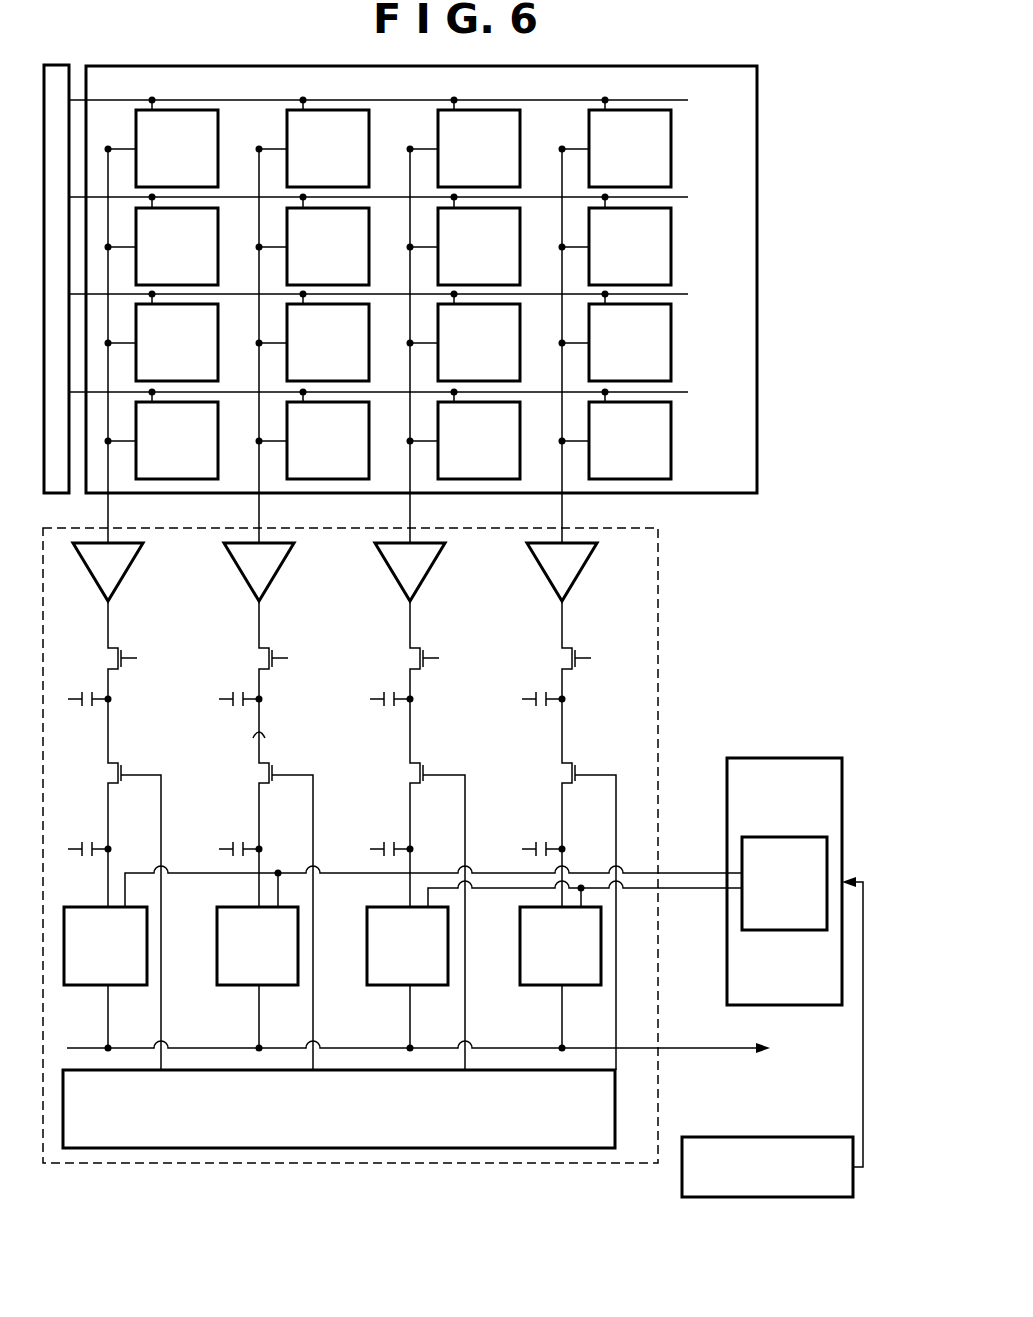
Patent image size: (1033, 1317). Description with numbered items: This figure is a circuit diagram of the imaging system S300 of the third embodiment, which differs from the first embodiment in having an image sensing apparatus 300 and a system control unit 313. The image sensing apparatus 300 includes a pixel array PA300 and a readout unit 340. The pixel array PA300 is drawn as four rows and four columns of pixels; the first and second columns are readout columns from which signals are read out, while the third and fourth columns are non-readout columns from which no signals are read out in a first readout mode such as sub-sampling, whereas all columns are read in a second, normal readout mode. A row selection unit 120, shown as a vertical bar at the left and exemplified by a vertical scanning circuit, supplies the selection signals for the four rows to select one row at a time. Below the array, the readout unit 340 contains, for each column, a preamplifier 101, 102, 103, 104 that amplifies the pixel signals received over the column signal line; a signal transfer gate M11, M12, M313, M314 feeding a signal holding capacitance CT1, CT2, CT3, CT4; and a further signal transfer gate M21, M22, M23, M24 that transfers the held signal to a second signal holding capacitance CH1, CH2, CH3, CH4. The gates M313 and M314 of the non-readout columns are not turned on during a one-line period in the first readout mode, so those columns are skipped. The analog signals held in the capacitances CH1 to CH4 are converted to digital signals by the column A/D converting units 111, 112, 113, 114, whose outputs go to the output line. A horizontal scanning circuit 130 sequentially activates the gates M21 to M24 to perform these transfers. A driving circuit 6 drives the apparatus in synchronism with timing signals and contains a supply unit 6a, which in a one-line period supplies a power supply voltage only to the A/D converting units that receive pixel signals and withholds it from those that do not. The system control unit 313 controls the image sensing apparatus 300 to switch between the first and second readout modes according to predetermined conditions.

The row selection unit 120 is at (58, 65).
The pixel array PA300 is at (720, 508).
The preamplifier 101 is at (125, 575).
The preamplifier 102 is at (276, 575).
The preamplifier 103 is at (427, 575).
The preamplifier 104 is at (579, 575).
The signal transfer gate M11 is at (149, 649).
The signal transfer gate M12 is at (300, 649).
The signal transfer gate M313 is at (458, 649).
The signal transfer gate M314 is at (610, 649).
The signal transfer gate M21 is at (148, 907).
The signal transfer gate M22 is at (299, 907).
The signal transfer gate M23 is at (450, 907).
The signal transfer gate M24 is at (602, 907).
The signal holding capacitance CT1 is at (84, 684).
The signal holding capacitance CT2 is at (235, 684).
The signal holding capacitance CT3 is at (386, 684).
The signal holding capacitance CT4 is at (538, 684).
The signal holding capacitance CH1 is at (84, 835).
The signal holding capacitance CH2 is at (235, 835).
The signal holding capacitance CH3 is at (386, 835).
The signal holding capacitance CH4 is at (538, 835).
The A/D converting unit 111 is at (78, 985).
The A/D converting unit 112 is at (229, 985).
The A/D converting unit 113 is at (380, 985).
The A/D converting unit 114 is at (531, 985).
The horizontal scanning circuit 130 is at (588, 1148).
The readout unit 340 is at (406, 873).
The image sensing apparatus 300 is at (406, 887).
The imaging system S300 is at (406, 887).
The driving circuit 6 is at (784, 857).
The supply unit 6a is at (785, 930).
The system control unit 313 is at (767, 1137).